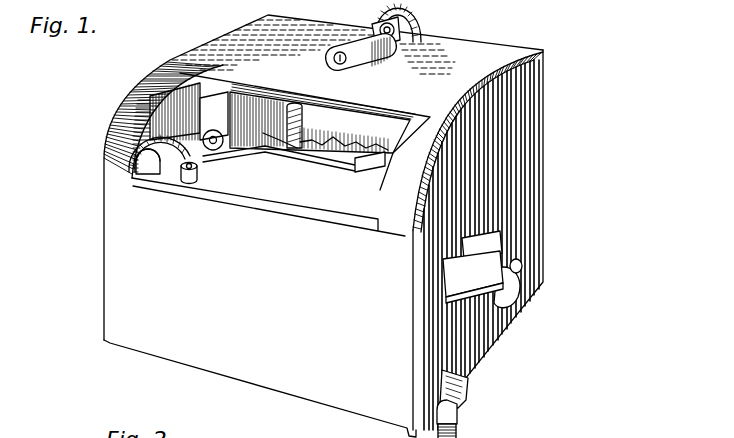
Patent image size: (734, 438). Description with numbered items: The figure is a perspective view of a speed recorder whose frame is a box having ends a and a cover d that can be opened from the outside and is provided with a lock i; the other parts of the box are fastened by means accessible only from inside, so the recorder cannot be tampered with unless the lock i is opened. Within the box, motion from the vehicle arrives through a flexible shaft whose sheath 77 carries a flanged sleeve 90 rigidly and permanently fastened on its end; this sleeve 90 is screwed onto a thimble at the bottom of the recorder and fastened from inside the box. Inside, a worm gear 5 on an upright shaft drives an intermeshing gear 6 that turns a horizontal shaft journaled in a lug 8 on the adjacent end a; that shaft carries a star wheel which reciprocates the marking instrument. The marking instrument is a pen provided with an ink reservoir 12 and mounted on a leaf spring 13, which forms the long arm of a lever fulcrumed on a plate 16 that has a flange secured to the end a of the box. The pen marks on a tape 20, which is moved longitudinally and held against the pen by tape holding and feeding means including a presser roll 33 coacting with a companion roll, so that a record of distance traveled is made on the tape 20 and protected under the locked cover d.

The ends a is at (537, 176).
The cover d is at (323, 226).
The lock i is at (361, 64).
The worm gear 5 is at (191, 182).
The intermeshing gear 6 is at (168, 172).
The lug 8 is at (143, 172).
The ink reservoir 12 is at (375, 167).
The leaf spring 13 is at (333, 158).
The plate 16 is at (221, 103).
The tape 20 is at (370, 124).
The presser roll 33 is at (294, 106).
The sheath 77 is at (457, 434).
The flanged sleeve 90 is at (462, 395).